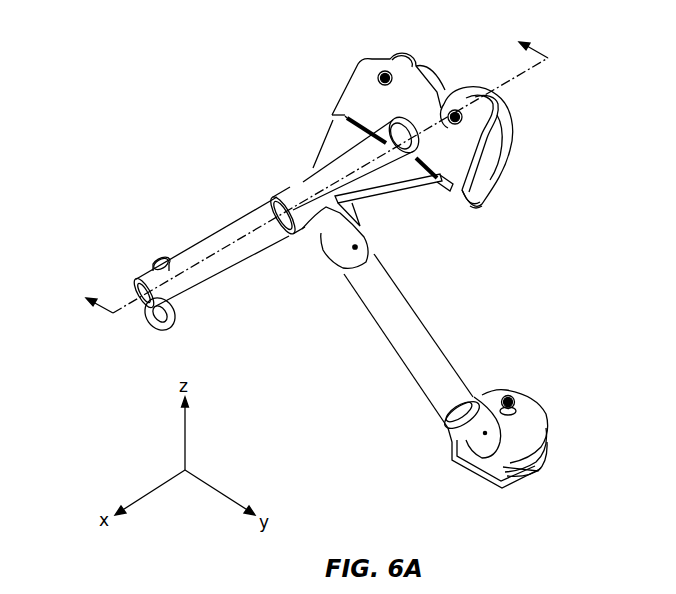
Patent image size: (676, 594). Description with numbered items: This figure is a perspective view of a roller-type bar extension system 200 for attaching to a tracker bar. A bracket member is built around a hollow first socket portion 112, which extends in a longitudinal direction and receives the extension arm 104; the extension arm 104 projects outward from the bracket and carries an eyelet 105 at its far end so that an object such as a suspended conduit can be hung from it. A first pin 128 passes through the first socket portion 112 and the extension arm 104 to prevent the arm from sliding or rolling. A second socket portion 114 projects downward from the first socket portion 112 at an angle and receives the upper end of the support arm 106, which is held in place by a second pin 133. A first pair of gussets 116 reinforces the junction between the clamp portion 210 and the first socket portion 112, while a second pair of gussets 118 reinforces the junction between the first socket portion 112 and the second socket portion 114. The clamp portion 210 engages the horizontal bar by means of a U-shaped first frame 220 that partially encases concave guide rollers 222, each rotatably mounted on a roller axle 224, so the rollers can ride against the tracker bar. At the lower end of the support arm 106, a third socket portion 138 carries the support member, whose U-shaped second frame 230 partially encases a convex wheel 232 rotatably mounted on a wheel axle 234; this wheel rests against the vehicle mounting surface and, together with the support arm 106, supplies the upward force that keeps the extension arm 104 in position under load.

The bar extension system 200 is at (101, 88).
The extension arm 104 is at (210, 247).
The eyelet 105 is at (152, 327).
The first socket portion 112 is at (303, 182).
The second socket portion 114 is at (328, 247).
The first pair of gussets 116 is at (340, 146).
The second pair of gussets 118 is at (358, 207).
The first pin 128 is at (360, 147).
The second pin 133 is at (359, 250).
The support arm 106 is at (407, 345).
The roller axle 224 is at (383, 70).
The roller 222 is at (500, 123).
The first frame 220 is at (485, 177).
The clamp portion 210 is at (476, 204).
The second frame 230 is at (527, 415).
The wheel axle 234 is at (512, 396).
The wheel 232 is at (537, 442).
The third socket portion 138 is at (475, 452).